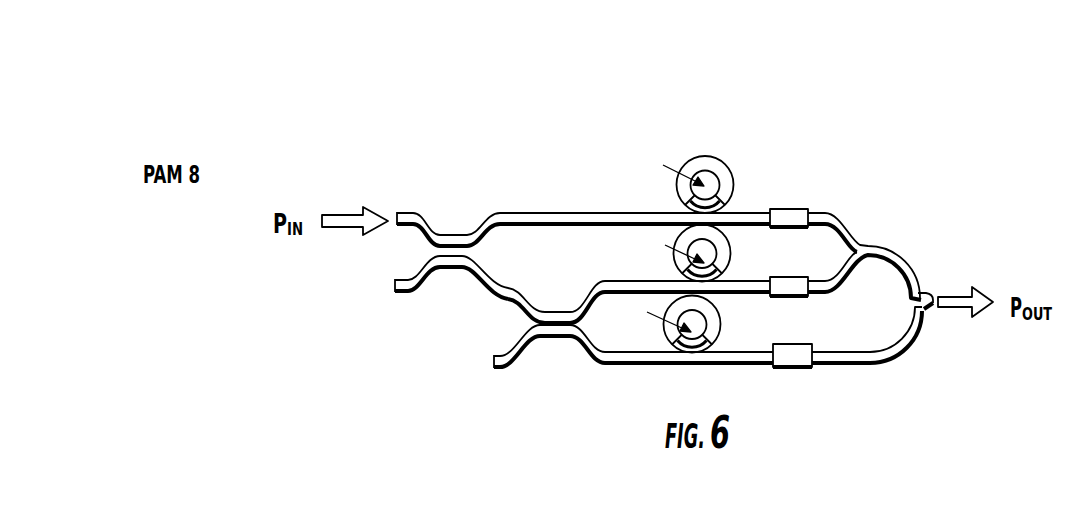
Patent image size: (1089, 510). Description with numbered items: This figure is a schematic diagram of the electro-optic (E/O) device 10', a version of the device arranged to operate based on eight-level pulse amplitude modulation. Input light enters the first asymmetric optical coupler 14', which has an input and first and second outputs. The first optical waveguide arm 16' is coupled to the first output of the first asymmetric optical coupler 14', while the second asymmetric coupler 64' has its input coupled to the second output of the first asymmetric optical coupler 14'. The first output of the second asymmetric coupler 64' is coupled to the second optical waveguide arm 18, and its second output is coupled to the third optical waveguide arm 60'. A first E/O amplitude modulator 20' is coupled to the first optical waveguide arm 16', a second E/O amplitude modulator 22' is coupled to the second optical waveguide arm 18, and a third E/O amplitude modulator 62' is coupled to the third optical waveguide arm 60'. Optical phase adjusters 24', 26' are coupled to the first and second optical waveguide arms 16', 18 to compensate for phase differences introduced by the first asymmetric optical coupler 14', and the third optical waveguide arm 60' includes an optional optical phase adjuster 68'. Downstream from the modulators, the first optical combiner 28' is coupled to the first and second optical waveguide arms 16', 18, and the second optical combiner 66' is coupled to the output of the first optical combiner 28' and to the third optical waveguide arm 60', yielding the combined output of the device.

The electro-optic (E/O) device 10' is at (619, 248).
The first asymmetric optical coupler 14' is at (451, 222).
The first optical waveguide arm 16' is at (662, 186).
The second optical waveguide arm 18 is at (585, 291).
The first E/O amplitude modulator 20' is at (691, 171).
The second E/O amplitude modulator 22' is at (695, 253).
The optical phase adjuster 24' is at (810, 193).
The optical phase adjuster 26' is at (806, 265).
The first optical combiner 28' is at (873, 278).
The third optical waveguide arm 60' is at (726, 378).
The third E/O amplitude modulator 62' is at (685, 324).
The second asymmetric coupler 64' is at (549, 342).
The second optical combiner 66' is at (940, 333).
The optical phase adjuster 68' is at (814, 335).